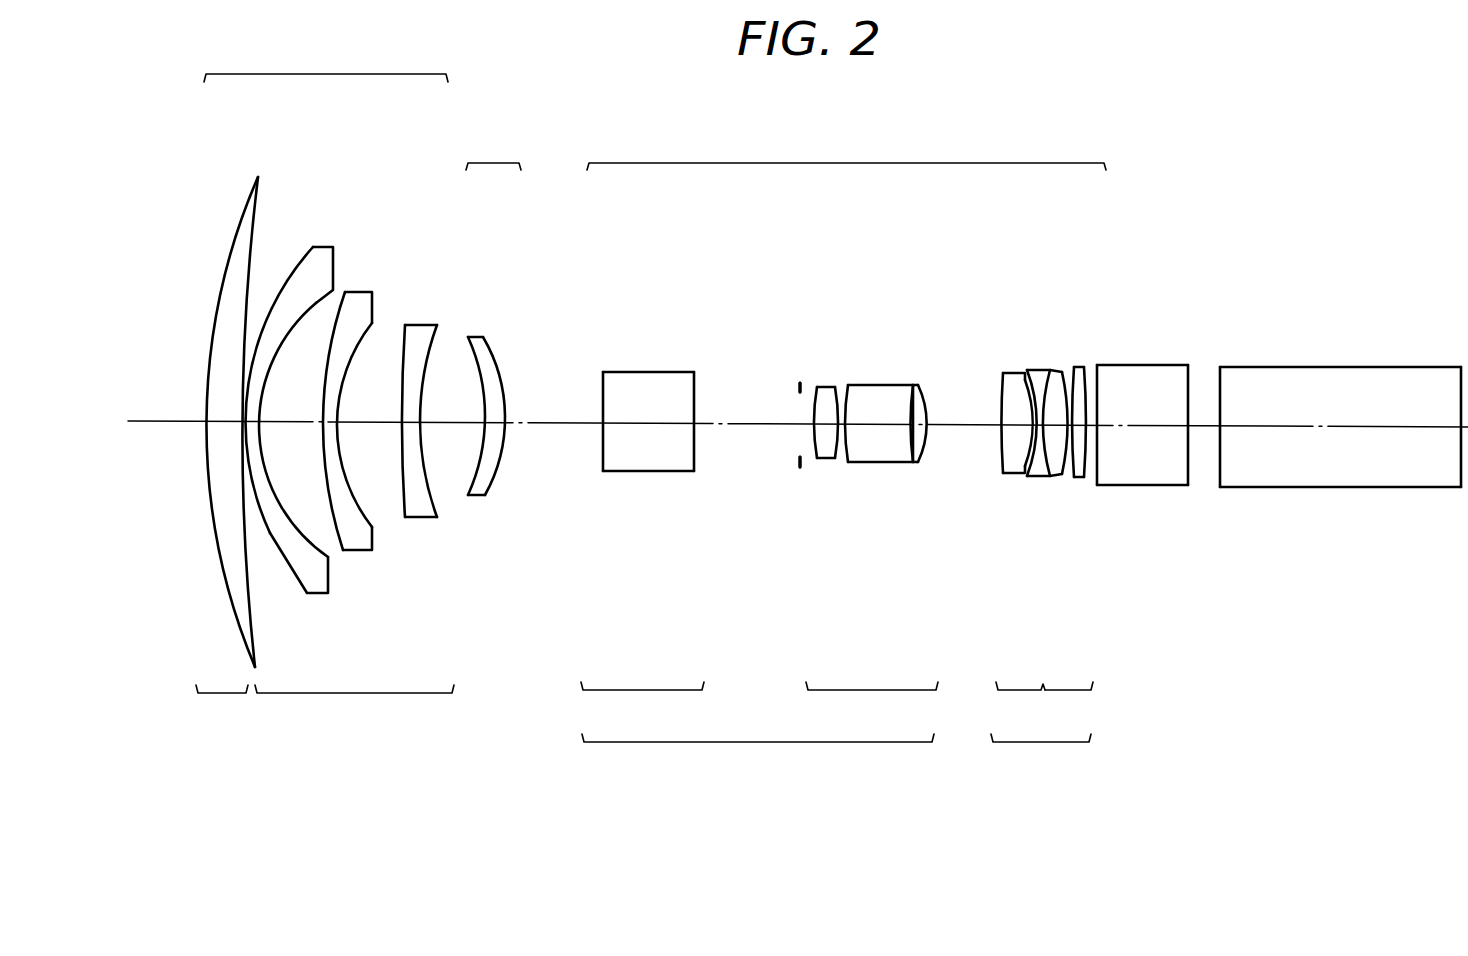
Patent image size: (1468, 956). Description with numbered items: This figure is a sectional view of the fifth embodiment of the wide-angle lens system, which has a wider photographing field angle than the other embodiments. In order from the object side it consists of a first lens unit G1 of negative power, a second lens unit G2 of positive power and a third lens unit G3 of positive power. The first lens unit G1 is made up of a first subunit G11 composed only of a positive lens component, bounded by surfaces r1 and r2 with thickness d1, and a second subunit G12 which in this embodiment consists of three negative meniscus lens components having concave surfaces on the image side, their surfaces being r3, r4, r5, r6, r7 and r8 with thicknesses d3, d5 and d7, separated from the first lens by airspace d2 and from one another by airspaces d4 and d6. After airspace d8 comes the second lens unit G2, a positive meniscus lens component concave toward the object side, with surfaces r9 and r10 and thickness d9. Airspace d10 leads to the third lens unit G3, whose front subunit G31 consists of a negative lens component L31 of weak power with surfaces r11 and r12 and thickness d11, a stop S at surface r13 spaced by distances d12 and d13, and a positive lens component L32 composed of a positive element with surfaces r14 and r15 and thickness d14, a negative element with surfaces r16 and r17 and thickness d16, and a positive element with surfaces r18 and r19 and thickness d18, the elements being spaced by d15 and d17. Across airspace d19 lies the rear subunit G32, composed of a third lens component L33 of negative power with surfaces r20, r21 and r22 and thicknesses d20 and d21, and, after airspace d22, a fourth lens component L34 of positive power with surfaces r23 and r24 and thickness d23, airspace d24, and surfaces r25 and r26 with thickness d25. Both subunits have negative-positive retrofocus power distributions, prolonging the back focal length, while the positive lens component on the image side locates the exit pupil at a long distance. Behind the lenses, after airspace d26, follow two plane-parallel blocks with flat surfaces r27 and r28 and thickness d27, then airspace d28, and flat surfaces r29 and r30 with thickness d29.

The first lens unit G1 is at (326, 60).
The second lens unit G2 is at (493, 147).
The third lens unit G3 is at (846, 148).
The 1-1 subunit G11 is at (222, 708).
The 1-2 subunit G12 is at (354, 708).
The 3-1 subunit G31 is at (758, 756).
The 3-2 subunit G32 is at (1041, 756).
The first lens component L31 is at (642, 552).
The second lens component L32 is at (872, 559).
The third lens component L33 is at (1020, 553).
The fourth lens component L34 is at (1088, 550).
The stop S is at (800, 462).
The radius of curvature of first surface r1 is at (238, 221).
The radius of curvature of second surface r2 is at (258, 215).
The radius of curvature of third surface r3 is at (295, 271).
The radius of curvature of fourth surface r4 is at (315, 301).
The radius of curvature of fifth surface r5 is at (340, 311).
The radius of curvature of sixth surface r6 is at (373, 323).
The radius of curvature of seventh surface r7 is at (405, 344).
The radius of curvature of eighth surface r8 is at (433, 344).
The radius of curvature of ninth surface r9 is at (468, 363).
The radius of curvature of tenth surface r10 is at (494, 361).
The radius of curvature of eleventh surface r11 is at (602, 383).
The radius of curvature of twelfth surface r12 is at (695, 397).
The stop surface r13 is at (799, 387).
The radius of curvature of fourteenth surface r14 is at (818, 395).
The radius of curvature of fifteenth surface r15 is at (836, 398).
The radius of curvature of sixteenth surface r16 is at (847, 397).
The radius of curvature of seventeenth surface r17 is at (911, 400).
The radius of curvature of eighteenth surface r18 is at (913, 397).
The radius of curvature of nineteenth surface r19 is at (932, 397).
The radius of curvature of twentieth surface r20 is at (1001, 380).
The radius of curvature of twenty-first surface r21 is at (1022, 387).
The radius of curvature of twenty-second surface r22 is at (1040, 385).
The radius of curvature of twenty-third surface r23 is at (1060, 377).
The radius of curvature of twenty-fourth surface r24 is at (1068, 376).
The radius of curvature of twenty-fifth surface r25 is at (1075, 371).
The radius of curvature of twenty-sixth surface r26 is at (1088, 386).
The radius of curvature of twenty-seventh surface r27 is at (1098, 382).
The radius of curvature of twenty-eighth surface r28 is at (1189, 383).
The radius of curvature of twenty-ninth surface r29 is at (1221, 385).
The radius of curvature of thirtieth surface r30 is at (1461, 387).
The thickness of first lens d1 is at (227, 424).
The airspace between first and second lenses d2 is at (243, 424).
The thickness of second lens d3 is at (255, 424).
The airspace between second and third lenses d4 is at (293, 424).
The thickness of third lens d5 is at (333, 424).
The airspace between third and fourth lenses d6 is at (365, 424).
The thickness of fourth lens d7 is at (413, 424).
The airspace between first and second lens units d8 is at (449, 424).
The thickness of second lens unit lens d9 is at (494, 424).
The airspace between second and third lens units d10 is at (541, 424).
The thickness of lens component L31 d11 is at (640, 427).
The airspace between L31 and stop d12 is at (731, 427).
The airspace between stop and L32 d13 is at (809, 427).
The thickness of first element of L32 d14 is at (826, 427).
The airspace within L32 d15 is at (841, 427).
The thickness of negative element of L32 d16 is at (875, 427).
The spacing between negative and last positive elements of L32 d17 is at (907, 427).
The thickness of last element of L32 d18 is at (921, 427).
The airspace between 3-1 and 3-2 subunits d19 is at (951, 427).
The thickness of first element of L33 d20 is at (1013, 427).
The thickness of second element of L33 d21 is at (1035, 427).
The airspace between L33 and L34 d22 is at (1042, 427).
The thickness of first element of L34 d23 is at (1056, 427).
The airspace within L34 d24 is at (1071, 427).
The thickness of last positive lens element d25 is at (1088, 427).
The airspace between last lens and first block d26 is at (1094, 427).
The thickness of first block d27 is at (1142, 427).
The airspace between blocks d28 is at (1202, 427).
The thickness of second block d29 is at (1314, 427).